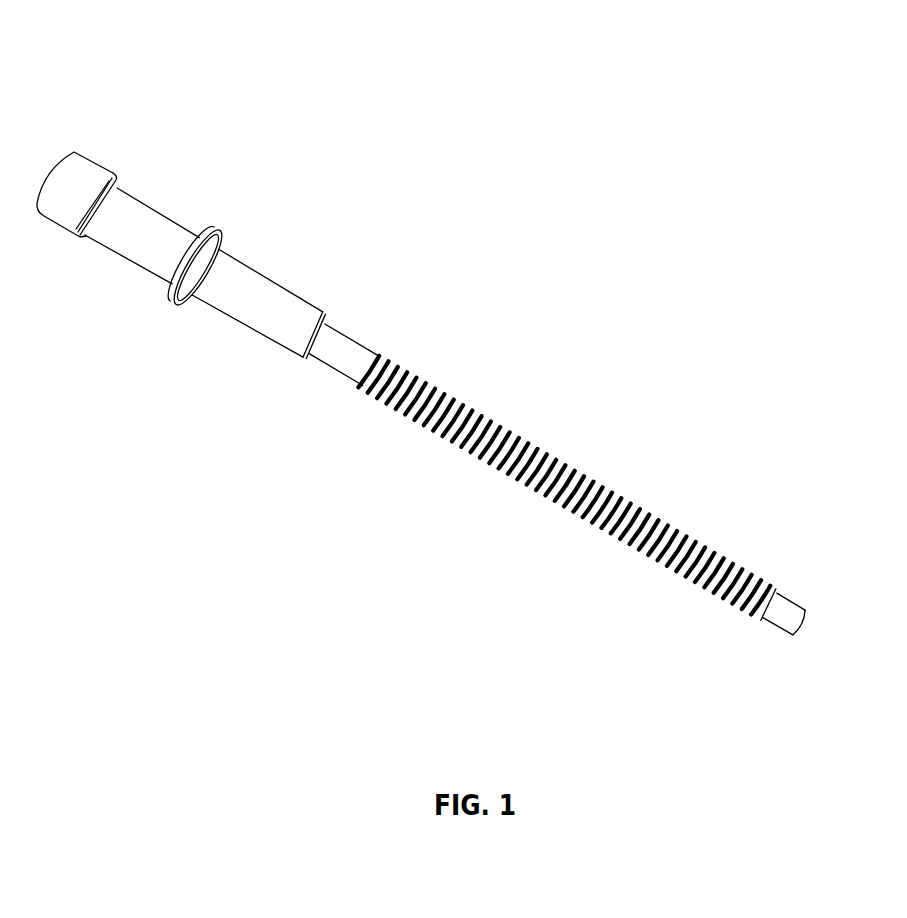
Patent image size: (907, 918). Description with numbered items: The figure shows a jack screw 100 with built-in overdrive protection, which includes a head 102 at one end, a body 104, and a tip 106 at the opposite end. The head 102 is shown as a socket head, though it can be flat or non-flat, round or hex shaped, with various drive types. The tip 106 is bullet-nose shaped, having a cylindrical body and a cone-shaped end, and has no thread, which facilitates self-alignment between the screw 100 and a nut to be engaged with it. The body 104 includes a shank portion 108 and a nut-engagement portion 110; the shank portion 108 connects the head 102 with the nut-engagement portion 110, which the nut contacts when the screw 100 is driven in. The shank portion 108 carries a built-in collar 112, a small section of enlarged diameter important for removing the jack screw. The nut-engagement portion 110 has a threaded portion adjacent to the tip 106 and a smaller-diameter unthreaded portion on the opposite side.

The screw 100 is at (829, 83).
The head 102 is at (95, 165).
The body 104 is at (398, 452).
The tip 106 is at (806, 622).
The shank portion 108 is at (216, 260).
The nut-engagement portion 110 is at (571, 449).
The built-in collar 112 is at (185, 293).